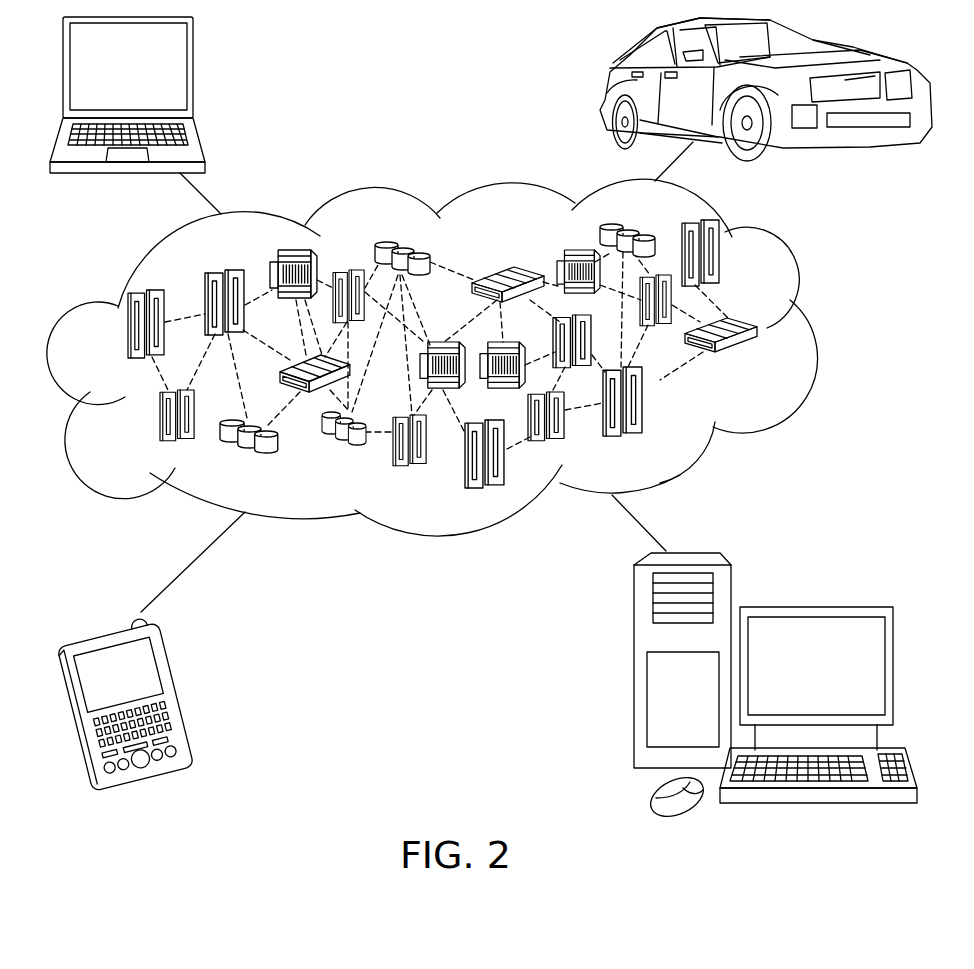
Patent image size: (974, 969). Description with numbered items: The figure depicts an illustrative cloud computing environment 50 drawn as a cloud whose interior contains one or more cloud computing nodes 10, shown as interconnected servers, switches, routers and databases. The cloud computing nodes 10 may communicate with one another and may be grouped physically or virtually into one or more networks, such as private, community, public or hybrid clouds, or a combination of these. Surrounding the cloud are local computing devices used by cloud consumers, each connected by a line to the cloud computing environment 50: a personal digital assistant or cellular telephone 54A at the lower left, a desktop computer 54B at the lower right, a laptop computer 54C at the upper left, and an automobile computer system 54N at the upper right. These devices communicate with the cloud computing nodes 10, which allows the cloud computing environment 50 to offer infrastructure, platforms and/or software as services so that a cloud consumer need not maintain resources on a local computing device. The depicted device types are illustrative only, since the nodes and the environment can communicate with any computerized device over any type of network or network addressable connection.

The cloud computing node 10 is at (764, 365).
The cloud computing environment 50 is at (816, 333).
The personal digital assistant or cellular telephone 54A is at (183, 697).
The desktop computer 54B is at (812, 607).
The laptop computer 54C is at (193, 75).
The automobile computer system 54N is at (606, 92).